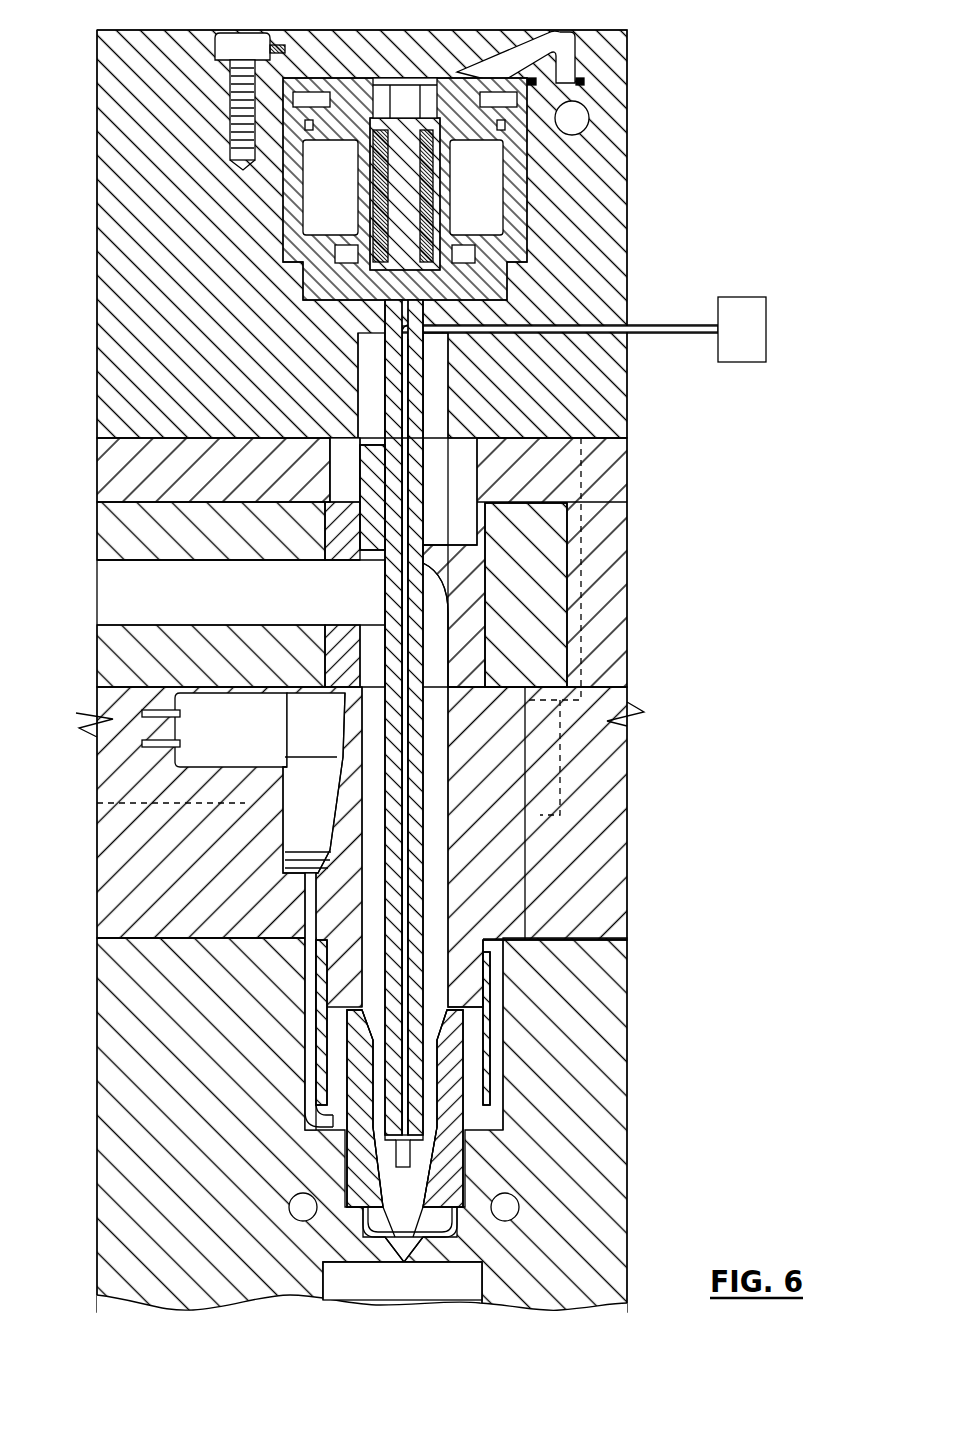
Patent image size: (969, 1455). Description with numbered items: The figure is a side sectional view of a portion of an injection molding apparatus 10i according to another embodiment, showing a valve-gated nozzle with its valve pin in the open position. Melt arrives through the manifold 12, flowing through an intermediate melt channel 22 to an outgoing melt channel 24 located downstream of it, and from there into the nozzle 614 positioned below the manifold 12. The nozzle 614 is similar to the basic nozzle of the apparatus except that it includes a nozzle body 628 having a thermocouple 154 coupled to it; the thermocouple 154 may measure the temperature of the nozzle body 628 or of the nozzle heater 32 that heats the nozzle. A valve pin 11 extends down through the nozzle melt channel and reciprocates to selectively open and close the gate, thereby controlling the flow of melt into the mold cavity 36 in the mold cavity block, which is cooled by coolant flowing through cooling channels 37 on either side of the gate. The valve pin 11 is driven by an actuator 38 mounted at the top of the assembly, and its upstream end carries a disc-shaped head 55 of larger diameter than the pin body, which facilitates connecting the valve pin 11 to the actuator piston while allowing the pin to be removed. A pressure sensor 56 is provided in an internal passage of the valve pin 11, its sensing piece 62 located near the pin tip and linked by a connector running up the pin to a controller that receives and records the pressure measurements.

The injection molding apparatus 10i is at (122, 410).
The actuator 38 is at (535, 183).
The head 55 is at (420, 280).
The valve pin 11 is at (420, 762).
The intermediate melt channel 22 is at (117, 580).
The outgoing melt channel 24 is at (437, 645).
The pressure sensor 56 is at (413, 823).
The nozzle 614 is at (463, 852).
The nozzle body 628 is at (470, 910).
The manifold 12 is at (608, 1082).
The nozzle heater 32 is at (318, 975).
The thermocouple 154 is at (330, 1082).
The sensing piece 62 is at (407, 1153).
The mold cavity 36 is at (440, 1285).
The cooling channel 37 is at (505, 1220).